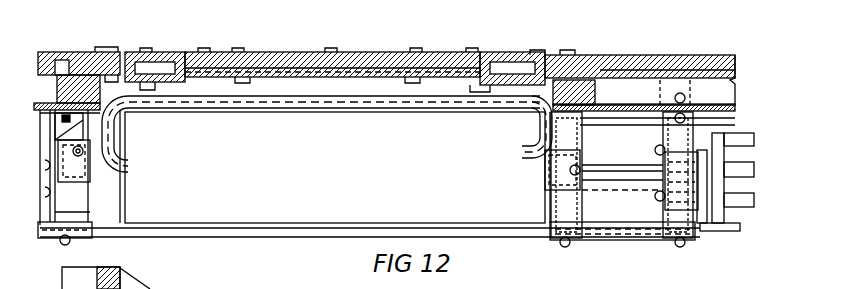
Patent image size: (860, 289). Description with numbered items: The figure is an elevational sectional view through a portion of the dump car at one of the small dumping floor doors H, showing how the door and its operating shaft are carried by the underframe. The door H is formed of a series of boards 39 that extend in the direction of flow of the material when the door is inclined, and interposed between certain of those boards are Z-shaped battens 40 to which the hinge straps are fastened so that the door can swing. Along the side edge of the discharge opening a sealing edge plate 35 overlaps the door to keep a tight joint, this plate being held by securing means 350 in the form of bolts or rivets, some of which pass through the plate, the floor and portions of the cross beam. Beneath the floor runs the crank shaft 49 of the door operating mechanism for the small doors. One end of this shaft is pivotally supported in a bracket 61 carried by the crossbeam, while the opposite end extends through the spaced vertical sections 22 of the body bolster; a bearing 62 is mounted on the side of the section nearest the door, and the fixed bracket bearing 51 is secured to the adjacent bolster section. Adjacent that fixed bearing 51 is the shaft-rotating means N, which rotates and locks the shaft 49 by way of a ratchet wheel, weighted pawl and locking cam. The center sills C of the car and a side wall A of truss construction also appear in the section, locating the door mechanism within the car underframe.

The side edge sealing plate 35 is at (105, 48).
The securing means 350 is at (120, 47).
The boards 39 is at (147, 67).
The Z-shaped battens 40 is at (200, 51).
The small dumping floor door H is at (287, 33).
The crank shaft 49 is at (280, 93).
The bracket 61 is at (100, 177).
The center sills C is at (370, 173).
The bolster sections 22 is at (578, 130).
The bearing 62 is at (562, 180).
The fixed bearing 51 is at (660, 205).
The shaft-rotating means N is at (722, 205).
The side wall A is at (125, 288).